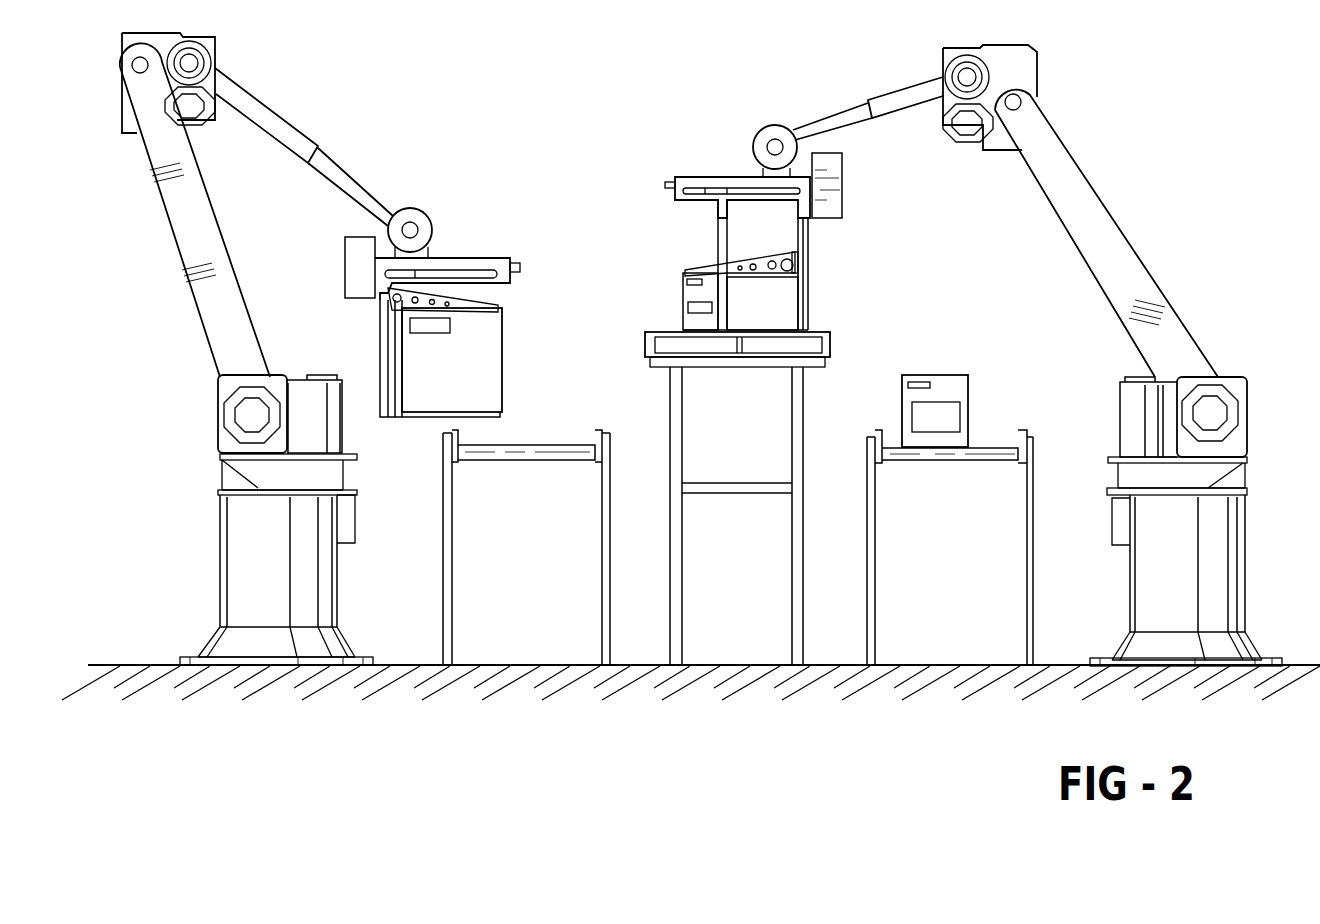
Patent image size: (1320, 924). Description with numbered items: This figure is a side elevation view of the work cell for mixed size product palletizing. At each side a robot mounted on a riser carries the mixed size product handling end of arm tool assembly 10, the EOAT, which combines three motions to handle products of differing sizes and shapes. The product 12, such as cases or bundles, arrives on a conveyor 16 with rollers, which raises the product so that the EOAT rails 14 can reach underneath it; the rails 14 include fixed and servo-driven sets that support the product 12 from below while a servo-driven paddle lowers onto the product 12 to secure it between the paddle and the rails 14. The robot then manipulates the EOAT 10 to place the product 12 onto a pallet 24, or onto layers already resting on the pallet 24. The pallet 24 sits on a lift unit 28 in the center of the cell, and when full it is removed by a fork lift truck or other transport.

The mixed size product handling end of arm tool assembly 10 is at (385, 357).
The product 12 is at (508, 374).
The rails 14 is at (404, 424).
The conveyor 16 is at (443, 555).
The pallet 24 is at (830, 345).
The lift unit 28 is at (803, 542).